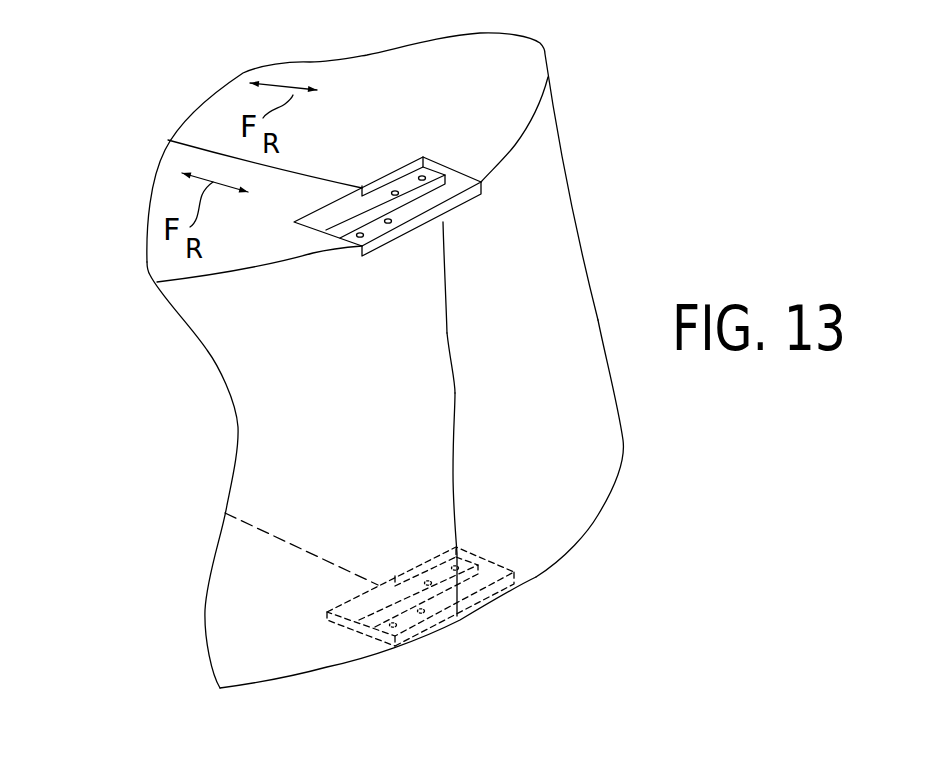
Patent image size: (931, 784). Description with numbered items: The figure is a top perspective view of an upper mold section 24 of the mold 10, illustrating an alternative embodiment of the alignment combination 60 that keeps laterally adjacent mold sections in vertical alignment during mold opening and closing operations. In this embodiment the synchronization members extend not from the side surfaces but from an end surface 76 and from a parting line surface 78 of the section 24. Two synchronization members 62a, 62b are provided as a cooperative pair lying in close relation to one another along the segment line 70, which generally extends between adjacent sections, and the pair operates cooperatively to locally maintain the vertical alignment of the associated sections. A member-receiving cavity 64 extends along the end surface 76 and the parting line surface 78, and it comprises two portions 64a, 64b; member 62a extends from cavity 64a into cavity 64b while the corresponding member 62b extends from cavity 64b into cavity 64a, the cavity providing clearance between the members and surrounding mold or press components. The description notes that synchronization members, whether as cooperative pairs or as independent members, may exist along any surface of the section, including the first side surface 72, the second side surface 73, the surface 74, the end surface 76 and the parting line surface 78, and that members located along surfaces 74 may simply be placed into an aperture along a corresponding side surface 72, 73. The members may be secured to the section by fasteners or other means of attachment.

The mold 10 is at (312, 360).
The upper mold section 24 is at (598, 479).
The alignment combination 60 is at (471, 346).
The synchronization member 62a is at (459, 183).
The synchronization member 62b is at (420, 176).
The synchronization member-receiving cavity 64 is at (472, 251).
The member-receiving cavity portion 64a is at (408, 237).
The member-receiving cavity portion 64b is at (453, 208).
The segment line 70 is at (447, 332).
The first side surface 72 is at (452, 412).
The second side surface 73 is at (455, 393).
The surface 74 is at (547, 131).
The end surface 76 is at (523, 50).
The parting line surface 78 is at (600, 517).